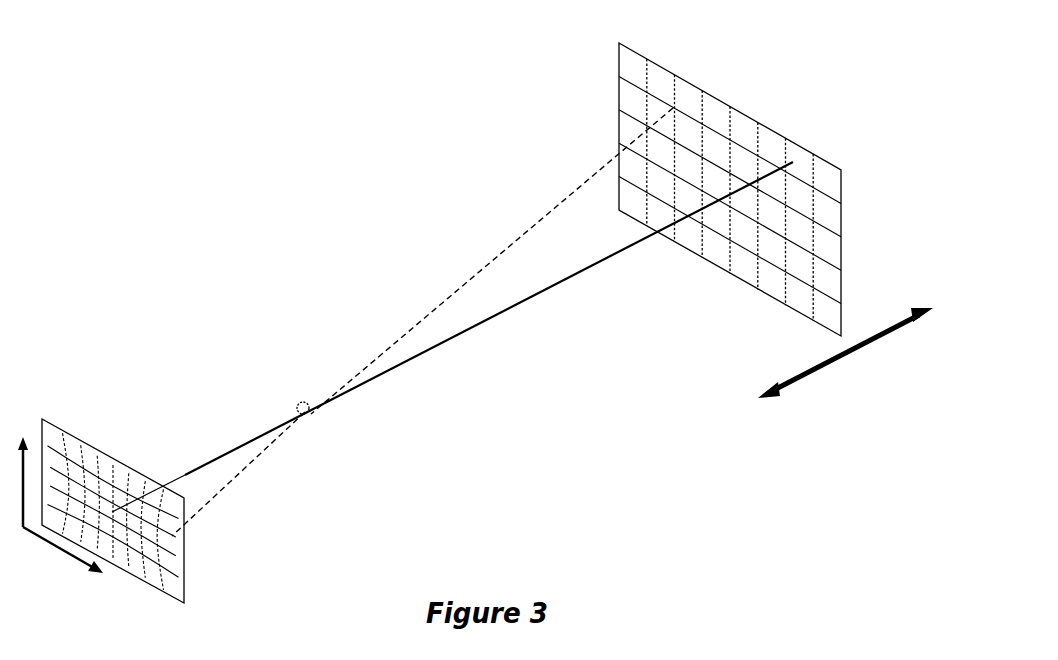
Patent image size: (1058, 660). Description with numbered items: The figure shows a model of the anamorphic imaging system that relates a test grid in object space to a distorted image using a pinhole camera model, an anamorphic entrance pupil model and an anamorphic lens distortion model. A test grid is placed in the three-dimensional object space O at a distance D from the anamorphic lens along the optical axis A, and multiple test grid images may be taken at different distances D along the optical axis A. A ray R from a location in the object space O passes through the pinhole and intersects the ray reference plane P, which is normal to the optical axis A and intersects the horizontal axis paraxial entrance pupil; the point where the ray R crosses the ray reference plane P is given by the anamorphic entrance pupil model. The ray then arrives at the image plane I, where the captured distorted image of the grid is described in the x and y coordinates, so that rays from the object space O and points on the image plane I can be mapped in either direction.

The object space O is at (714, 180).
The optical axis A is at (505, 310).
The ray reference plane R is at (512, 235).
The ray reference plane P is at (311, 416).
The distance D is at (845, 355).
The image plane I is at (126, 521).
The x coordinate x is at (63, 561).
The y coordinate y is at (26, 476).